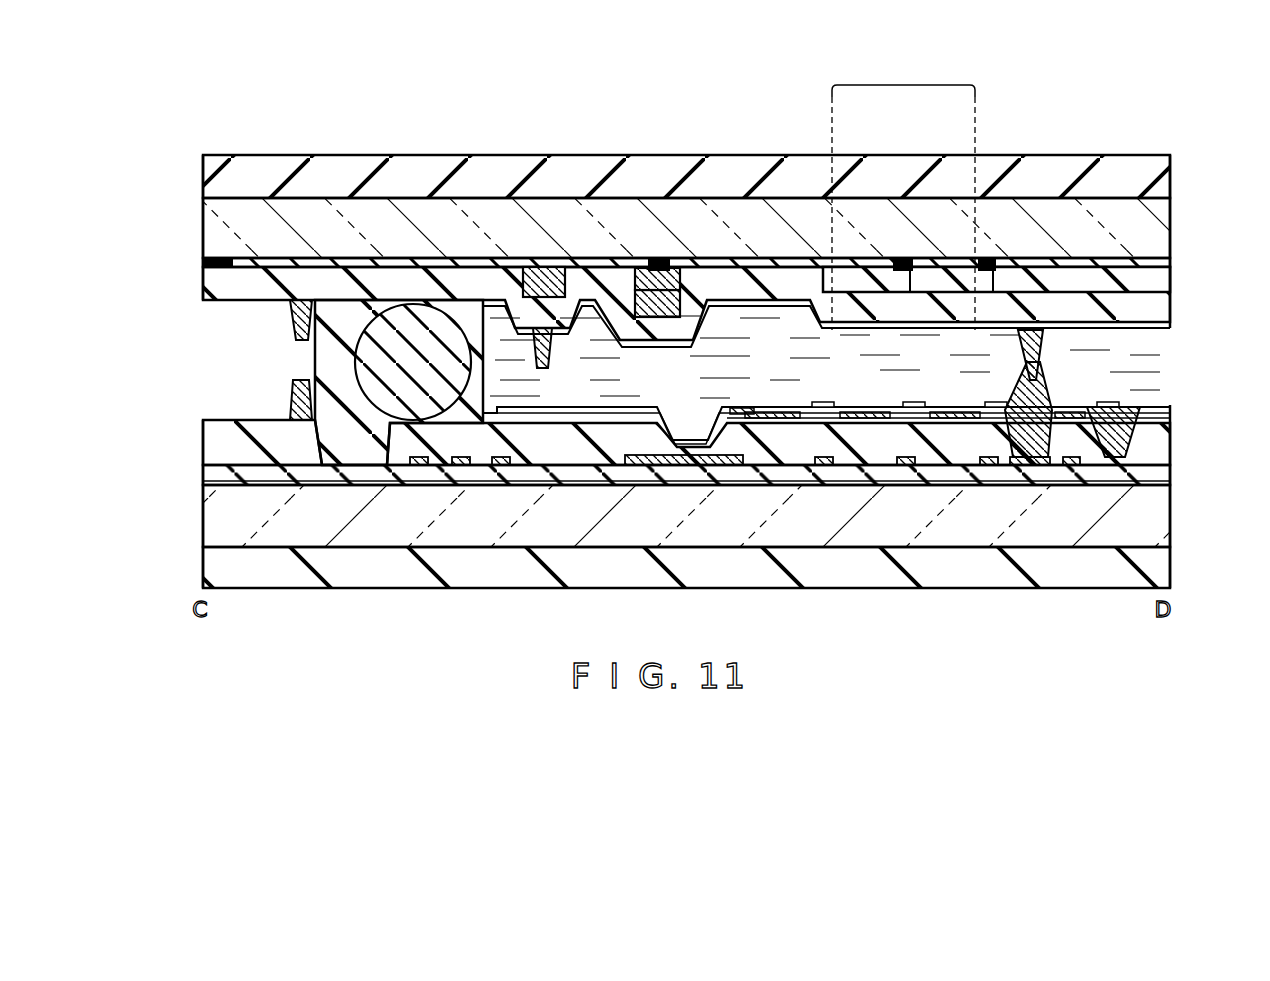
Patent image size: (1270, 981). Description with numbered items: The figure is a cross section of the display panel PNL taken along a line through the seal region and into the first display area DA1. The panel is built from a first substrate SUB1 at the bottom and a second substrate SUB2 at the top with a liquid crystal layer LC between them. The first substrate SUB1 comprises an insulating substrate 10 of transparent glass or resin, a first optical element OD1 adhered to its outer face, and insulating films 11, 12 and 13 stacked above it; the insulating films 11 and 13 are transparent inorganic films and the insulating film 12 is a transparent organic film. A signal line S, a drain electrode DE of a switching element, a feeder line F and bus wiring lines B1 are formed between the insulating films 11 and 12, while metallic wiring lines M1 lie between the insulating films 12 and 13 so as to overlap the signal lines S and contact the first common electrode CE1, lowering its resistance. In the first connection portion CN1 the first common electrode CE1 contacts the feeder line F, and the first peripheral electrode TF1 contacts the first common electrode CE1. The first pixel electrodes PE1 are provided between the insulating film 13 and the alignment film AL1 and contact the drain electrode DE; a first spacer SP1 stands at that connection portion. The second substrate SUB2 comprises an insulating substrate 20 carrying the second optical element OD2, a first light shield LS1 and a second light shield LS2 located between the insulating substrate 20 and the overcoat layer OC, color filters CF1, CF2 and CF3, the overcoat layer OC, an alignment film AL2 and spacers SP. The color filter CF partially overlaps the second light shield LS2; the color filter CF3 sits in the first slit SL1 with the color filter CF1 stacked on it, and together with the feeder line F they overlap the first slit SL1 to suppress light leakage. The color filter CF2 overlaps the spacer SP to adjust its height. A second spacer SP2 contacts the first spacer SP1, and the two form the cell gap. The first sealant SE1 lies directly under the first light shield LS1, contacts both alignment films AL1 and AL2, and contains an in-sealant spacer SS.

The display panel PNL is at (198, 204).
The first substrate SUB1 is at (198, 512).
The second substrate SUB2 is at (198, 288).
The first light shield LS1 is at (206, 266).
The second light shield LS2 is at (1158, 262).
The first sealant SE1 is at (333, 305).
The in-sealant spacer SS is at (400, 307).
The color filter CF1 is at (690, 297).
The color filter CF2 is at (540, 290).
The color filter CF3 is at (650, 280).
The color filter CF is at (1168, 286).
The first slit SL1 is at (658, 270).
The first display area DA1 is at (903, 191).
The second optical element OD2 is at (1150, 182).
The first optical element OD1 is at (1142, 575).
The insulating substrate 20 is at (1160, 214).
The insulating substrate 10 is at (1148, 519).
The overcoat layer OC is at (1168, 306).
The alignment film AL2 is at (1152, 330).
The alignment film AL1 is at (1160, 407).
The liquid crystal layer LC is at (1158, 358).
The insulating film 13 is at (1170, 422).
The insulating film 12 is at (1168, 446).
The insulating film 11 is at (1170, 483).
The spacer SP is at (544, 368).
The first spacer SP1 is at (1024, 378).
The second spacer SP2 is at (1046, 333).
The first connection portion CN1 is at (693, 429).
The first peripheral electrode TF1 is at (740, 407).
The first common electrode CE1 is at (769, 411).
The first pixel electrode PE1 is at (862, 411).
The metallic wiring line M1 is at (823, 411).
The signal line S is at (823, 466).
The drain electrode DE is at (1028, 466).
The feeder line F is at (678, 466).
The bus wiring line B1 is at (415, 469).